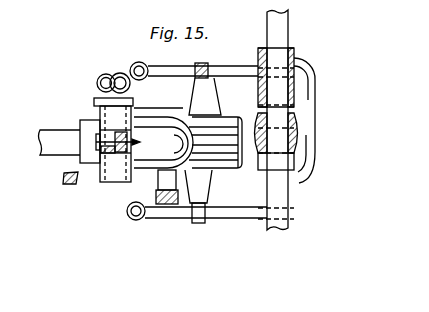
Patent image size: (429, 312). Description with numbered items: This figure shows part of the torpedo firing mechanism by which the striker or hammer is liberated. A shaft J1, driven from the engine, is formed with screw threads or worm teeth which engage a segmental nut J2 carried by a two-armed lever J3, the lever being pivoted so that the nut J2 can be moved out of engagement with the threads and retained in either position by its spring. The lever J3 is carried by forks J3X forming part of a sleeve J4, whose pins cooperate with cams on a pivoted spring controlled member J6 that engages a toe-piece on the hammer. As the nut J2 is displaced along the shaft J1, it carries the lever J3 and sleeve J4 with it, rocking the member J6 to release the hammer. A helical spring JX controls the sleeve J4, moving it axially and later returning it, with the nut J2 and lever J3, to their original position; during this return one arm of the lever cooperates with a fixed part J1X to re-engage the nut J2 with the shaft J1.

The shaft J1 is at (53, 140).
The fixed part J1X is at (63, 178).
The segmental nut J2 is at (95, 162).
The two-armed lever J3 is at (95, 97).
The forks J3X is at (119, 76).
The sleeve J4 is at (205, 72).
The spring controlled member J6 is at (245, 72).
The helical spring JX is at (213, 170).